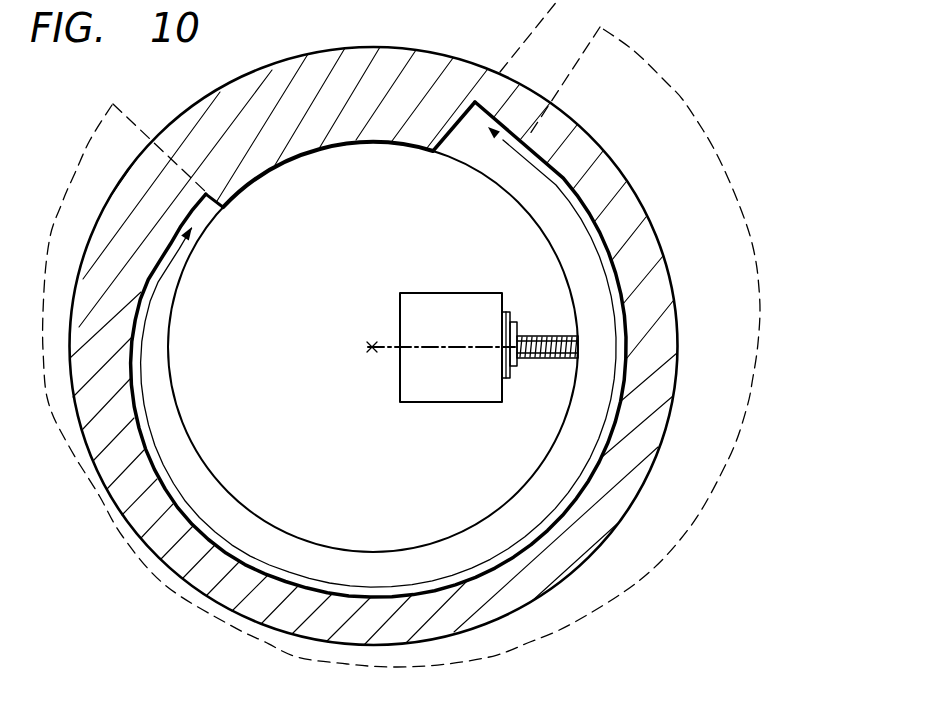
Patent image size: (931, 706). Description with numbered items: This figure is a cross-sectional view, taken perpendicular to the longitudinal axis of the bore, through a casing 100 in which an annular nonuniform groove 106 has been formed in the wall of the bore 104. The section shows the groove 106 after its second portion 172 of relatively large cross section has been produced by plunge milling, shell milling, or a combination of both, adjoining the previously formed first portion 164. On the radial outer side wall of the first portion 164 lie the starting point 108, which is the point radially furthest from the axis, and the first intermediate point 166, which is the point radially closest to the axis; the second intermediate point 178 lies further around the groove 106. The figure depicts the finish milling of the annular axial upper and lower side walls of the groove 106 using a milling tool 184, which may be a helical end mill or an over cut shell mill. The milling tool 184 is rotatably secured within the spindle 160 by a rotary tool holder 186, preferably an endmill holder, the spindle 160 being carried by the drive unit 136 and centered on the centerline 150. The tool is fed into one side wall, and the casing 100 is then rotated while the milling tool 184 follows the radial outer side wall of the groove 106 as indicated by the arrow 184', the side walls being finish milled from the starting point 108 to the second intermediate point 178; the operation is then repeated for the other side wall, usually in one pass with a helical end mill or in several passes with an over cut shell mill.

The casing 100 is at (180, 120).
The inner bore / drum 104 is at (234, 498).
The annular nonuniform groove 106 is at (307, 552).
The starting point 108 is at (477, 100).
The motor 136 is at (428, 292).
The axis 150 is at (371, 345).
The spindle 160 is at (506, 312).
The first portion 164 is at (598, 22).
The first intermediate point 166 is at (530, 148).
The second portion 172 is at (668, 84).
The second intermediate point 178 is at (211, 199).
The milling tool 184 is at (547, 319).
The arrow 184' is at (378, 363).
The rotary tool holder 186 is at (516, 366).